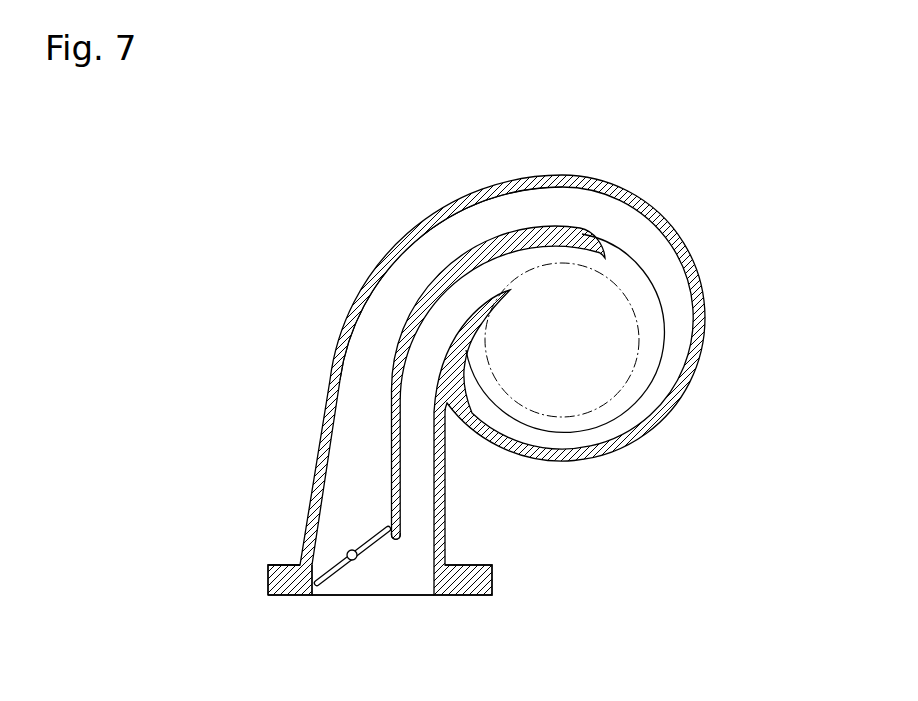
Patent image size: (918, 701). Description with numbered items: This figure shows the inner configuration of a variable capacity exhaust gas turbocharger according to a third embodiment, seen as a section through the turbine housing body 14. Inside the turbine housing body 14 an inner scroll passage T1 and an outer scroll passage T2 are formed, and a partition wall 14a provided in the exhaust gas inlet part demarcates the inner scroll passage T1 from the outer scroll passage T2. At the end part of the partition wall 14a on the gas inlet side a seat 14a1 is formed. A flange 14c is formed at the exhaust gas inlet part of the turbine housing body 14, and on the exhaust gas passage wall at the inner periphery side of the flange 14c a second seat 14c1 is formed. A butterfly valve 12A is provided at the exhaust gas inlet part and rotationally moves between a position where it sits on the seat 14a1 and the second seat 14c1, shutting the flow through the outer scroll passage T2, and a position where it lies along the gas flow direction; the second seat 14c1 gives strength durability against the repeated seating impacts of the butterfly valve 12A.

The turbine housing body 14 is at (707, 303).
The partition wall 14a is at (392, 468).
The seat 14a1 is at (393, 536).
The flange 14c is at (492, 577).
The second seat 14c1 is at (296, 582).
The butterfly valve 12A is at (333, 578).
The inner scroll passage T1 is at (478, 287).
The outer scroll passage T2 is at (400, 283).